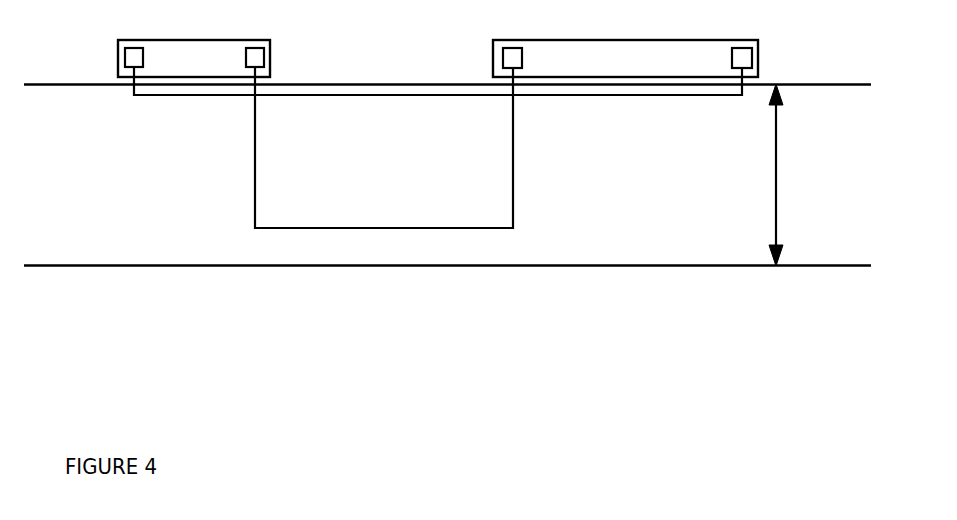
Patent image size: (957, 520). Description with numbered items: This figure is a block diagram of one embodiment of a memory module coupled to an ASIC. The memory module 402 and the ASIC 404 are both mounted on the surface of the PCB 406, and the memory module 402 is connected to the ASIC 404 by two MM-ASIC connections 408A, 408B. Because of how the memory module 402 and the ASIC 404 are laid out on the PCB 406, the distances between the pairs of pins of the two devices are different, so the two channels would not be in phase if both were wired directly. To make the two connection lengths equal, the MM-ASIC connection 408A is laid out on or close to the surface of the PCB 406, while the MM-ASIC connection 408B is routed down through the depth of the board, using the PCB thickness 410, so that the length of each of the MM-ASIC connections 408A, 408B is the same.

The memory module 402 is at (194, 58).
The ASIC 404 is at (625, 58).
The PCB 406 is at (447, 175).
The MM-ASIC connection 408A is at (427, 111).
The MM-ASIC connection 408B is at (446, 147).
The PCB thickness 410 is at (839, 175).